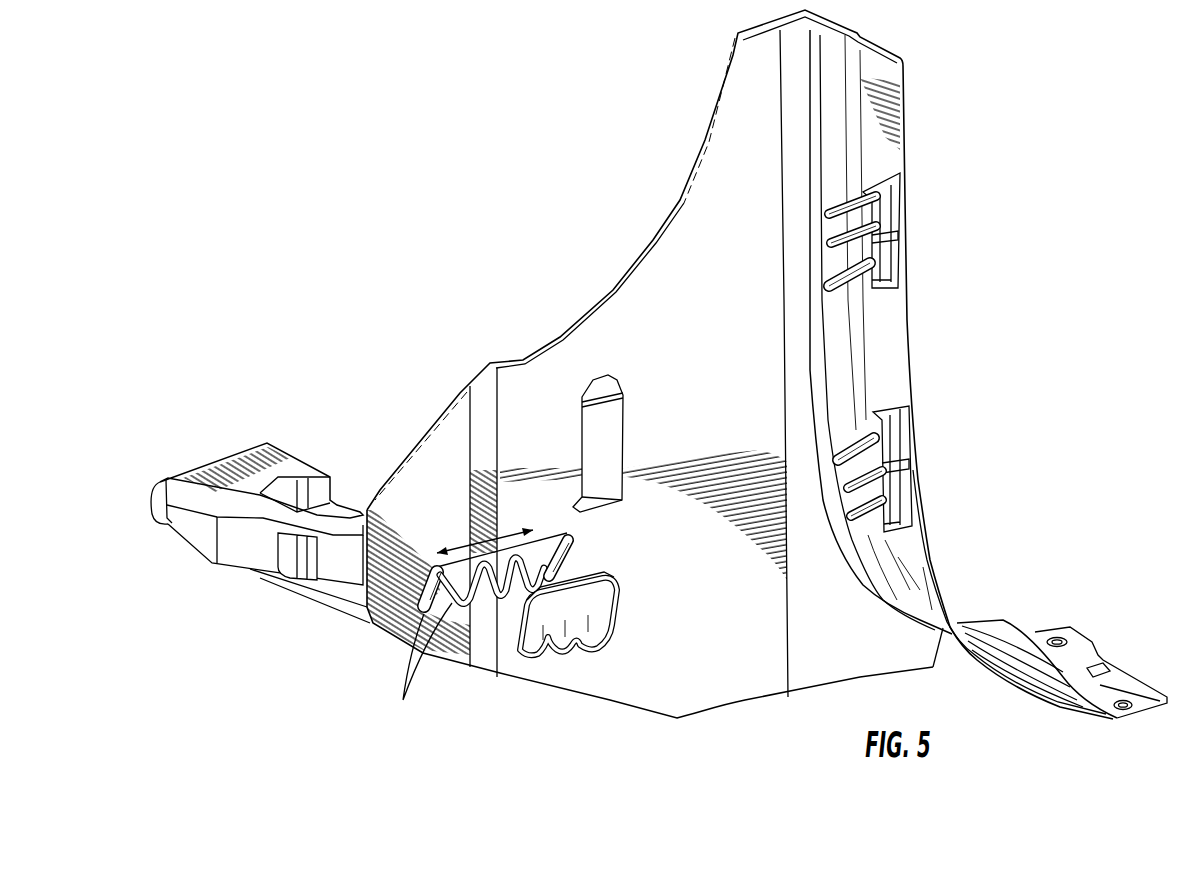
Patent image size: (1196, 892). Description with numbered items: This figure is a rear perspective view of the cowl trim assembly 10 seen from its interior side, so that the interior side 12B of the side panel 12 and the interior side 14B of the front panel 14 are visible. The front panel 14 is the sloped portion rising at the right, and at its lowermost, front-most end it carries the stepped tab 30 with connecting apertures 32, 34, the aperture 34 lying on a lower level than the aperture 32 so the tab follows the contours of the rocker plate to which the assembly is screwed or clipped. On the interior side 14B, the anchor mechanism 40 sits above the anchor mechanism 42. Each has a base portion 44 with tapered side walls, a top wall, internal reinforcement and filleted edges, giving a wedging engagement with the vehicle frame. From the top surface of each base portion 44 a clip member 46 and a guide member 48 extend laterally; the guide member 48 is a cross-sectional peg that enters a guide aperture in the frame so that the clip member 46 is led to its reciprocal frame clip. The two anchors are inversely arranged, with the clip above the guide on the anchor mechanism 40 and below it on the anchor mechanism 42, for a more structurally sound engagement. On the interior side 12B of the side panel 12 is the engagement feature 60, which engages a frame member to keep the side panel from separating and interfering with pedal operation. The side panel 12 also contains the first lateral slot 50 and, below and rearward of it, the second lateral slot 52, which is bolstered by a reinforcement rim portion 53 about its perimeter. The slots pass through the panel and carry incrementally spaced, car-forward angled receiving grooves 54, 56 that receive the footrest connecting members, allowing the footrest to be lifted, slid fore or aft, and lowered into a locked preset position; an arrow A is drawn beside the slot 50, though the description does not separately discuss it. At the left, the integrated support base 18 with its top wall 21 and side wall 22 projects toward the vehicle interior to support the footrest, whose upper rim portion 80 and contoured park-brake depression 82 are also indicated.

The cowl trim assembly 10 is at (482, 196).
The side panel 12 is at (670, 267).
The interior side of side panel 12B is at (700, 332).
The front panel 14 is at (913, 313).
The interior side of front panel 14B is at (862, 358).
The support base 18 is at (255, 532).
The top wall 21 is at (285, 458).
The side wall 22 is at (207, 538).
The tab 30 is at (1062, 672).
The connecting aperture 32 is at (1055, 639).
The connecting aperture 34 is at (1123, 710).
The anchor mechanism 40 is at (842, 197).
The anchor mechanism 42 is at (852, 461).
The base portion 44 is at (887, 230).
The clip member 46 is at (833, 230).
The guide member 48 is at (828, 287).
The first lateral slot 50 is at (473, 617).
The second lateral slot 52 is at (607, 661).
The reinforcement rim portion 53 is at (613, 590).
The receiving grooves 54 is at (417, 667).
The receiving grooves 56 is at (587, 648).
The engagement feature 60 is at (607, 442).
The upper rim portion 80 is at (175, 486).
The contoured depression 82 is at (292, 570).
The direction of movement A is at (470, 537).